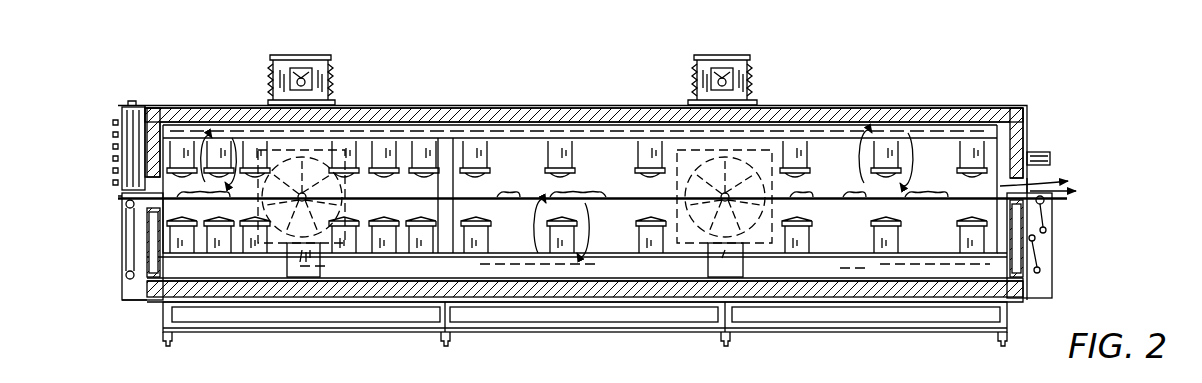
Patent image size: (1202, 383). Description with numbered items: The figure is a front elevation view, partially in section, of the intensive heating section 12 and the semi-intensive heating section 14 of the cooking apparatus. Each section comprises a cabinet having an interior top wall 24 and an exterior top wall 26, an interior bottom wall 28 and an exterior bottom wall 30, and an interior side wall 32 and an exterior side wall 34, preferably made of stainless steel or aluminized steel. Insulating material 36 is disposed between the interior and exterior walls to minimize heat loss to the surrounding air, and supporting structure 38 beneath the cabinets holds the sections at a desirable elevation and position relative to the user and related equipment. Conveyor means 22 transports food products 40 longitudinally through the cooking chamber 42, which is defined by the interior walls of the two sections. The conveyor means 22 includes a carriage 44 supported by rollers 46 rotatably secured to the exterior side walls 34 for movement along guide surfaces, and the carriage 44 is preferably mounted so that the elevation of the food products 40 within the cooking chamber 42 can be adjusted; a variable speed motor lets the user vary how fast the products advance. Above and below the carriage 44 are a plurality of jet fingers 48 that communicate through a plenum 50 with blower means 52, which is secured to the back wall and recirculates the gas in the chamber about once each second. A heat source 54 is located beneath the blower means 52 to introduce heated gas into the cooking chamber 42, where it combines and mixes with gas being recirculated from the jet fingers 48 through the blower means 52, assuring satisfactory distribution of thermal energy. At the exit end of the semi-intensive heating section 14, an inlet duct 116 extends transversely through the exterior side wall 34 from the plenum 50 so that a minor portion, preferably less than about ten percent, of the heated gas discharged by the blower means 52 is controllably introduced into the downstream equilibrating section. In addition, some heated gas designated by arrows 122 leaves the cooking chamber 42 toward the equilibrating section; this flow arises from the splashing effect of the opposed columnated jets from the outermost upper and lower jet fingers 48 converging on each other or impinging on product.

The intensive heating section 12 is at (177, 97).
The semi-intensive heating section 14 is at (1020, 92).
The conveyor means 22 is at (125, 285).
The interior top wall 24 is at (793, 116).
The exterior top wall 26 is at (870, 106).
The interior bottom wall 28 is at (520, 268).
The exterior bottom wall 30 is at (585, 298).
The interior side wall 32 is at (120, 141).
The exterior side wall 34 is at (148, 250).
The insulating material 36 is at (526, 106).
The supporting structure 38 is at (212, 330).
The food products 40 is at (502, 195).
The cooking chamber 42 is at (603, 165).
The carriage 44 is at (147, 197).
The rollers 46 is at (128, 208).
The jet fingers 48 is at (378, 165).
The plenum 50 is at (857, 231).
The blower means 52 is at (300, 190).
The heat source 54 is at (300, 262).
The inlet duct 116 is at (1040, 155).
The arrows 122 is at (1050, 182).